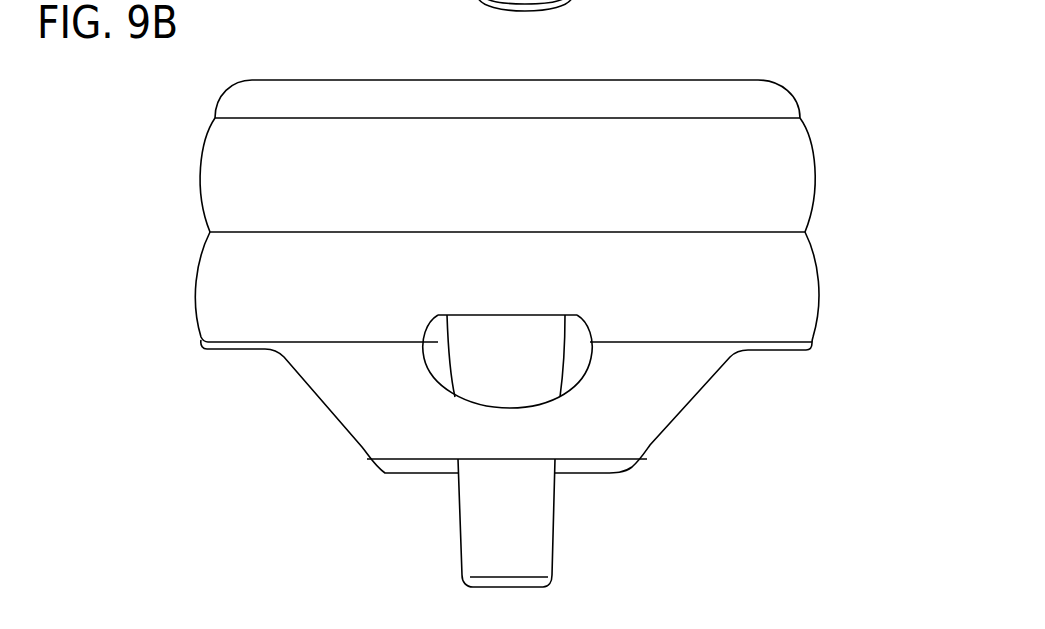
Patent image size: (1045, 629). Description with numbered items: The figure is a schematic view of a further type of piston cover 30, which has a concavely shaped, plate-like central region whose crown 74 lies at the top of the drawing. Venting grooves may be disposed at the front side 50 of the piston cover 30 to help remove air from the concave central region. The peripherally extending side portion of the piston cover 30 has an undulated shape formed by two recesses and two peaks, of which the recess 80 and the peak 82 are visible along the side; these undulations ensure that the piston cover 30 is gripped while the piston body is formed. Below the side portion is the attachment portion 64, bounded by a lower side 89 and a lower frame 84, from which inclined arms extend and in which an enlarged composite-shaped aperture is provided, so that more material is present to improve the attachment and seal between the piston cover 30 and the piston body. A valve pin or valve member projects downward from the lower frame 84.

The piston cover 30 is at (560, 295).
The front side 50 is at (652, 80).
The crown 74 is at (478, 80).
The recess 80 is at (800, 119).
The peak 82 is at (795, 165).
The lower side 89 is at (782, 353).
The attachment portion 64 is at (703, 398).
The lower frame 84 is at (490, 447).